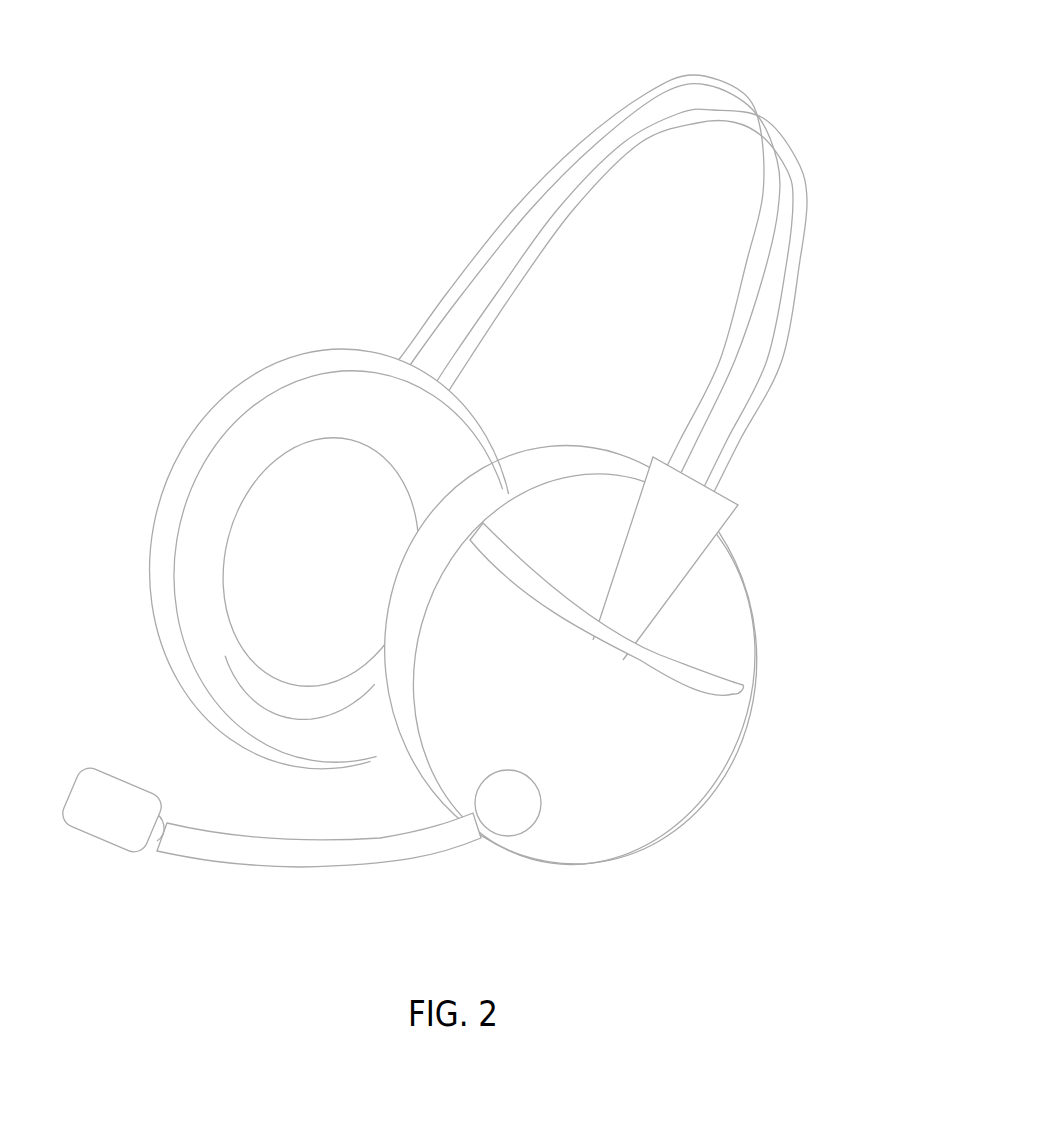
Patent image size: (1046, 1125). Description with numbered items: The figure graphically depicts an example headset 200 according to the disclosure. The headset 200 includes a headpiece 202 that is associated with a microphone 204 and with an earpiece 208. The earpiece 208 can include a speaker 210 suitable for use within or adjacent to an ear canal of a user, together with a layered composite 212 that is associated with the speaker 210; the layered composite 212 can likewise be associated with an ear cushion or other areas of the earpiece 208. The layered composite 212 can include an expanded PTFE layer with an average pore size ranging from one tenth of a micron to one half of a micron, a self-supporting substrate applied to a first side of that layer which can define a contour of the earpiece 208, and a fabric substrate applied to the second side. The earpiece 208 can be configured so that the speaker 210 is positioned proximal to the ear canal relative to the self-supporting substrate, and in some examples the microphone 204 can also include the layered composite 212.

The headset 200 is at (303, 57).
The headpiece 202 is at (805, 182).
The microphone 204 is at (98, 792).
The earpiece 208 is at (229, 364).
The speaker 210 is at (321, 568).
The layered composite 212 is at (210, 648).